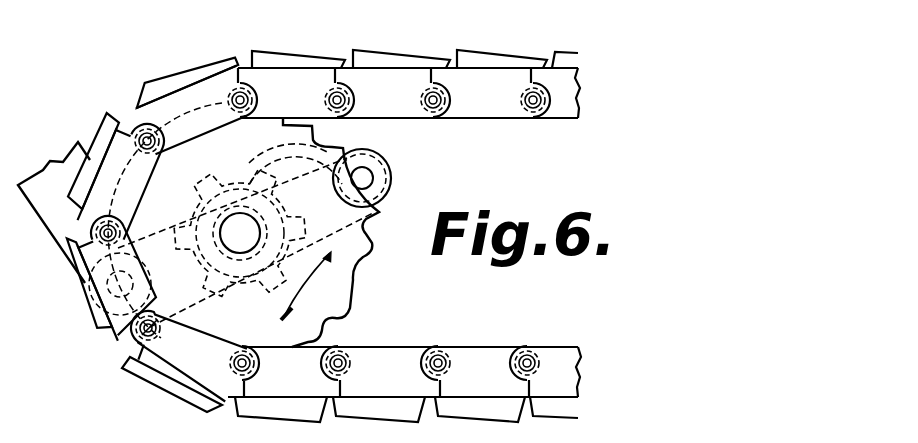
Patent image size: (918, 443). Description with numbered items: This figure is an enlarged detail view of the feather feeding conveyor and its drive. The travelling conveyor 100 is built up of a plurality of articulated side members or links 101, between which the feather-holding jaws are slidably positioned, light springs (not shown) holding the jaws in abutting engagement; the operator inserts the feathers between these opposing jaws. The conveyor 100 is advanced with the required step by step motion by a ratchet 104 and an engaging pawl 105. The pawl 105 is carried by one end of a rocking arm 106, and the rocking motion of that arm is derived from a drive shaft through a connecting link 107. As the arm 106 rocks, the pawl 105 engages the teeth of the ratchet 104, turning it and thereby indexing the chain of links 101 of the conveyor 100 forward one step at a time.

The travelling conveyor 100 is at (395, 120).
The articulated side members or links 101 is at (182, 103).
The ratchet 104 is at (220, 183).
The engaging pawl 105 is at (255, 205).
The rocking arm 106 is at (150, 327).
The connecting link 107 is at (62, 162).